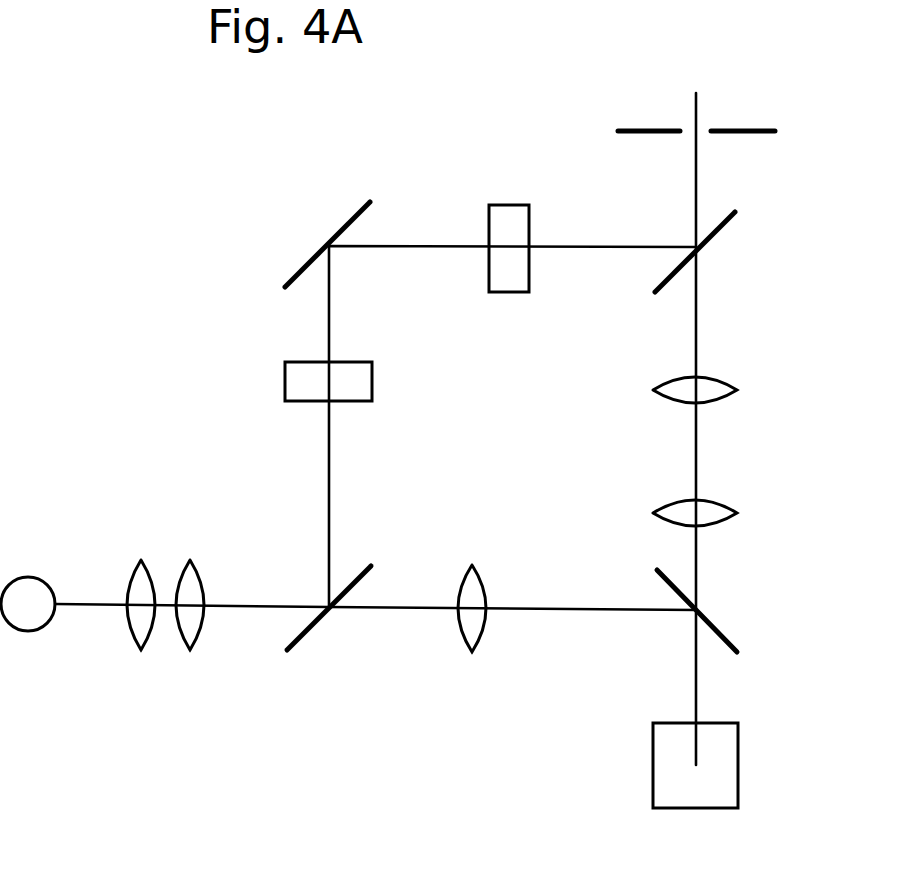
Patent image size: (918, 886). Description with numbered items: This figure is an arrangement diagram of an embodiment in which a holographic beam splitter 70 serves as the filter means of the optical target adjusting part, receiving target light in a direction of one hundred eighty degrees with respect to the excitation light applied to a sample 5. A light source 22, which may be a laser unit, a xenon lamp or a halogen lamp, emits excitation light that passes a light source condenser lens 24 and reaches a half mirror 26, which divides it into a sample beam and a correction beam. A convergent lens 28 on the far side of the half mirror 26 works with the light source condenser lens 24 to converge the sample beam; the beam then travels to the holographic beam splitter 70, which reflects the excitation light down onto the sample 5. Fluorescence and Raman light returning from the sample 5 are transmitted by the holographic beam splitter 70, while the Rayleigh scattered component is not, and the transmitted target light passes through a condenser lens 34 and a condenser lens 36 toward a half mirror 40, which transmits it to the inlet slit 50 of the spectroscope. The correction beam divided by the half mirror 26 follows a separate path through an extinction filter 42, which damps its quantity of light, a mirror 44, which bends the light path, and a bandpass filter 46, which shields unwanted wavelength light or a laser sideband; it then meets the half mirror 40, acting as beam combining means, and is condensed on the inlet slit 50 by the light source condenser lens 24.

The light source 22 is at (28, 576).
The light source condenser lens 24 is at (162, 572).
The half mirror 26 is at (313, 636).
The convergent lens 28 is at (465, 640).
The mirror 44 is at (292, 282).
The extinction filter 42 is at (283, 382).
The bandpass filter 46 is at (505, 200).
The half mirror 40 is at (730, 222).
The inlet slit 50 is at (750, 128).
The condenser lens 36 is at (718, 381).
The condenser lens 34 is at (710, 502).
The holographic beam splitter 70 is at (725, 632).
The sample 5 is at (740, 762).